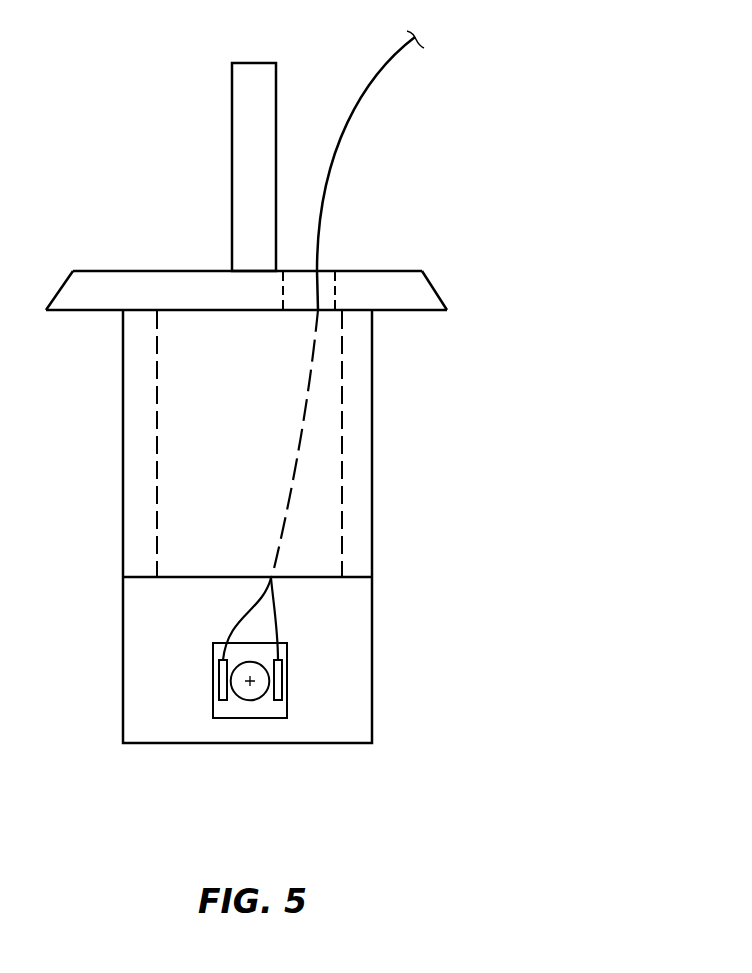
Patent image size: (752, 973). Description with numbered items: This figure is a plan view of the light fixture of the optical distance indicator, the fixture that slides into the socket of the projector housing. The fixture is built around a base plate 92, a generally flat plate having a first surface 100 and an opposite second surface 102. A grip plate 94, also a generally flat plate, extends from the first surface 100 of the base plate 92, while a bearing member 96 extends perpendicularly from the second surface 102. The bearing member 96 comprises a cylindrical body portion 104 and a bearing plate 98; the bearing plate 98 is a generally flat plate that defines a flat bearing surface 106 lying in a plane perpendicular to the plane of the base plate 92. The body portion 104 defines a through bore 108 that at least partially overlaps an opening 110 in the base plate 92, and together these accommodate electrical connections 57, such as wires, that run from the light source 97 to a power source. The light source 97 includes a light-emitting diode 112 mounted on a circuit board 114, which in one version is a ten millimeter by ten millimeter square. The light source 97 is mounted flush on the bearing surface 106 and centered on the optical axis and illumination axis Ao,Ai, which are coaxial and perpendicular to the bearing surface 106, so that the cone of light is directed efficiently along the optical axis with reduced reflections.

The electrical connections 57 is at (362, 103).
The base plate 92 is at (423, 292).
The grip plate 94 is at (252, 73).
The bearing member 96 is at (359, 510).
The light source 97 is at (282, 722).
The bearing plate 98 is at (148, 672).
The first surface 100 is at (392, 270).
The second surface 102 is at (415, 312).
The body portion 104 is at (359, 433).
The bearing surface 106 is at (349, 630).
The through bore 108 is at (158, 470).
The opening 110 is at (326, 273).
The light-emitting-diode (LED) 112 is at (250, 700).
The circuit board 114 is at (225, 712).
The optical axis and illumination axis Ao,Ai is at (252, 683).